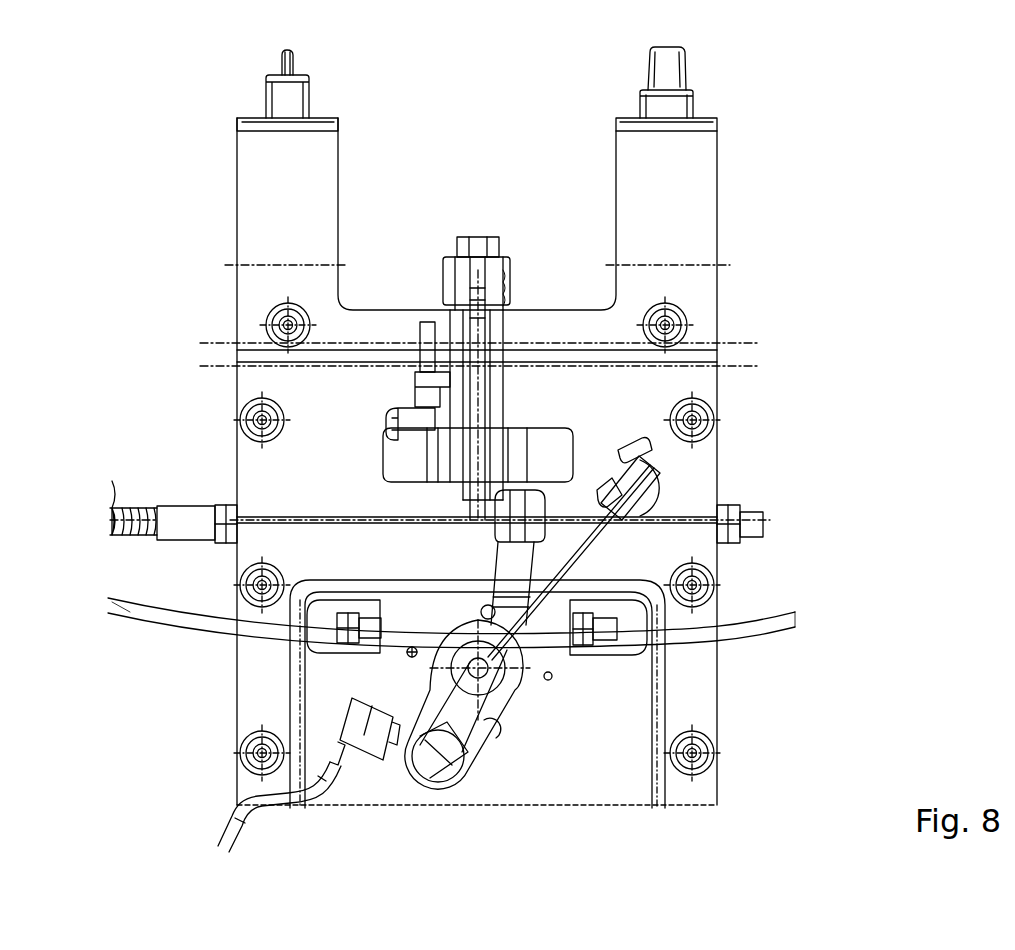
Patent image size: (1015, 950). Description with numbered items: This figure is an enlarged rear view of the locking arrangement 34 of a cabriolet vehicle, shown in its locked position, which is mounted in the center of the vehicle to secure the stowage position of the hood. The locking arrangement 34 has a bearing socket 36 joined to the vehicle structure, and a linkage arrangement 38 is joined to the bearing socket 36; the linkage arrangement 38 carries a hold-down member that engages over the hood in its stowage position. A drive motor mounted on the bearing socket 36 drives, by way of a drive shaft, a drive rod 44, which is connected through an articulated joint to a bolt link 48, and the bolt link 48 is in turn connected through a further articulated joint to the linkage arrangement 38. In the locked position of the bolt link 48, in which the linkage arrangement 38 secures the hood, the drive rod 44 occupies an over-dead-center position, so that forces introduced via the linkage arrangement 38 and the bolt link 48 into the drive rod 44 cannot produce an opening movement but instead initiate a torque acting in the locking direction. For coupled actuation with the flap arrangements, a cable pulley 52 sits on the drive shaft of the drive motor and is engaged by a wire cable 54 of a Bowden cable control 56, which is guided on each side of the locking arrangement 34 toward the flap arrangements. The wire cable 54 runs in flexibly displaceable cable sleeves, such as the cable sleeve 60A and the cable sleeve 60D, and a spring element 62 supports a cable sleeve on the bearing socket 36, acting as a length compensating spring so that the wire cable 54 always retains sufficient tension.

The locking arrangement 34 is at (720, 265).
The bearing socket 36 is at (700, 787).
The linkage arrangement 38 is at (475, 335).
The drive rod 44 is at (470, 745).
The bolt link 48 is at (525, 676).
The cable pulley 52 is at (515, 690).
The wire cable 54 is at (340, 660).
The Bowden cable control 56 is at (130, 622).
The cable sleeve 60A is at (177, 617).
The cable sleeve 60D is at (790, 620).
The spring element 62 is at (133, 505).